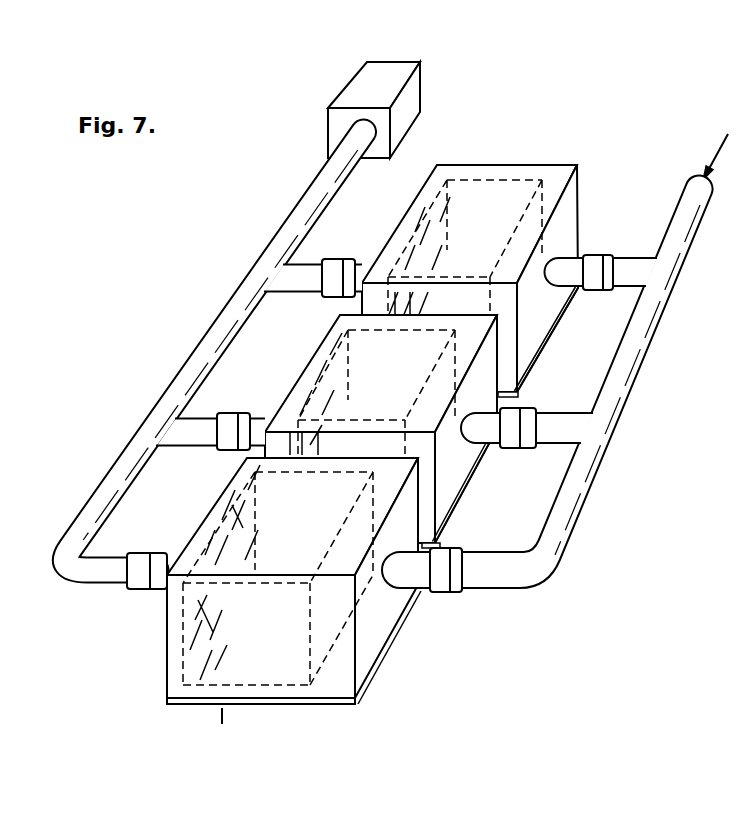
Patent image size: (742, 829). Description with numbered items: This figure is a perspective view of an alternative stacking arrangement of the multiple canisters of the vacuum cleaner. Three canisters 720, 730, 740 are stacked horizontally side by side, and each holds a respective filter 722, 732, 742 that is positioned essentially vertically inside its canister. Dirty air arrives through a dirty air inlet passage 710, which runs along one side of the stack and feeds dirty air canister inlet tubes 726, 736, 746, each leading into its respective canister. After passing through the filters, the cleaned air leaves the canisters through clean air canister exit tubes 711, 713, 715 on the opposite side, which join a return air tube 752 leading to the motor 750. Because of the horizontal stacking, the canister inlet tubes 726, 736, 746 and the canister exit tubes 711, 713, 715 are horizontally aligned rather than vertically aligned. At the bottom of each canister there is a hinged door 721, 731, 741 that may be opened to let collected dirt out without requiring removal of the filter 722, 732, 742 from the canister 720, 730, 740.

The dirty air inlet passage 710 is at (612, 423).
The clean air canister exit tube 711 is at (308, 277).
The clean air canister exit tube 713 is at (190, 432).
The clean air canister exit tube 715 is at (92, 597).
The canister 720 is at (494, 234).
The hinged door 721 is at (550, 343).
The filter 722 is at (448, 183).
The dirty air canister inlet tube 726 is at (565, 267).
The canister 730 is at (395, 384).
The hinged door 731 is at (458, 513).
The filter 732 is at (310, 397).
The dirty air canister inlet tube 736 is at (480, 430).
The canister 740 is at (315, 524).
The hinged door 741 is at (290, 703).
The filter 742 is at (239, 732).
The dirty air canister inlet tube 746 is at (418, 590).
The motor 750 is at (372, 83).
The return air tube 752 is at (222, 303).